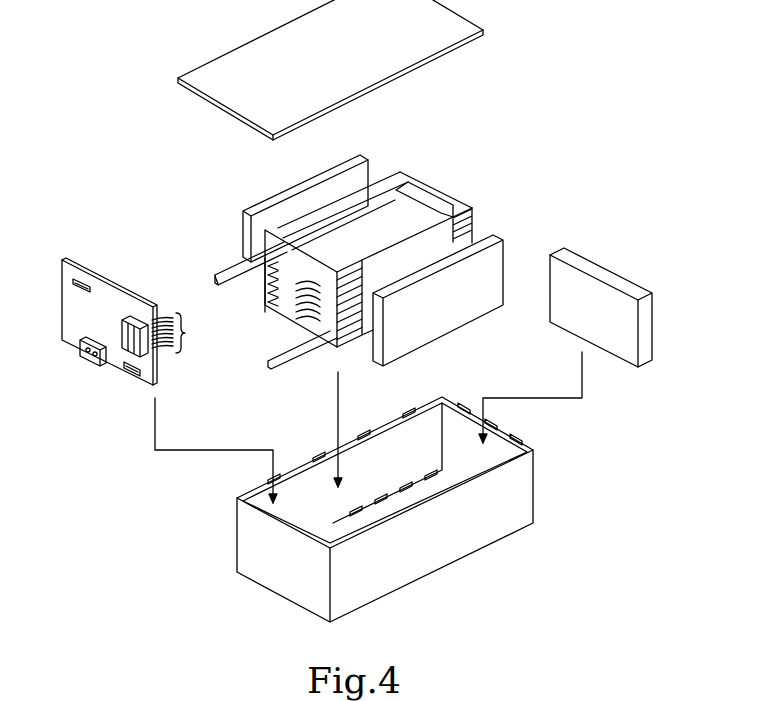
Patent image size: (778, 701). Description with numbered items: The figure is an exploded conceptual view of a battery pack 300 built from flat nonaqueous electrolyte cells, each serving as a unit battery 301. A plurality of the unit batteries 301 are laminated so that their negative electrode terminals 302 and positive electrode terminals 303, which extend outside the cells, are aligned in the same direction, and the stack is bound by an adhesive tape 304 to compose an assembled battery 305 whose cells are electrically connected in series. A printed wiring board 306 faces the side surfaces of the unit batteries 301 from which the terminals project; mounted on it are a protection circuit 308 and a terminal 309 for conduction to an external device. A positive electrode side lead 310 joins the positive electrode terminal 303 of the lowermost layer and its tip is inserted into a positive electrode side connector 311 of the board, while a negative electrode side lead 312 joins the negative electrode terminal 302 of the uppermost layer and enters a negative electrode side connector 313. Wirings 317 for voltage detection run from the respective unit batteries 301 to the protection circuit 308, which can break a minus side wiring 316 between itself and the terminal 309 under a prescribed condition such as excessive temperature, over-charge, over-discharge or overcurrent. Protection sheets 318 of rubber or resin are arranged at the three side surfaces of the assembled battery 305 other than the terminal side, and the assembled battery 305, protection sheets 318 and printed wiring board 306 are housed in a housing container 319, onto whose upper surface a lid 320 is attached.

The battery pack 300 is at (112, 55).
The unit battery 301 is at (472, 211).
The negative electrode terminal 302 is at (270, 250).
The positive electrode terminal 303 is at (340, 252).
The adhesive tape 304 is at (415, 220).
The assembled battery 305 is at (333, 201).
The printed wiring board 306 is at (82, 258).
The protection circuit 308 is at (130, 312).
The terminal for conduction to an external device 309 is at (95, 364).
The positive electrode side lead 310 is at (322, 360).
The positive electrode side connector 311 is at (148, 371).
The negative electrode side lead 312 is at (217, 280).
The negative electrode side connector 313 is at (90, 277).
The minus side wiring 316 is at (647, 330).
The wirings for voltage detection 317 is at (186, 333).
The protection sheet 318 is at (288, 195).
The housing container 319 is at (527, 492).
The lid 320 is at (446, 21).